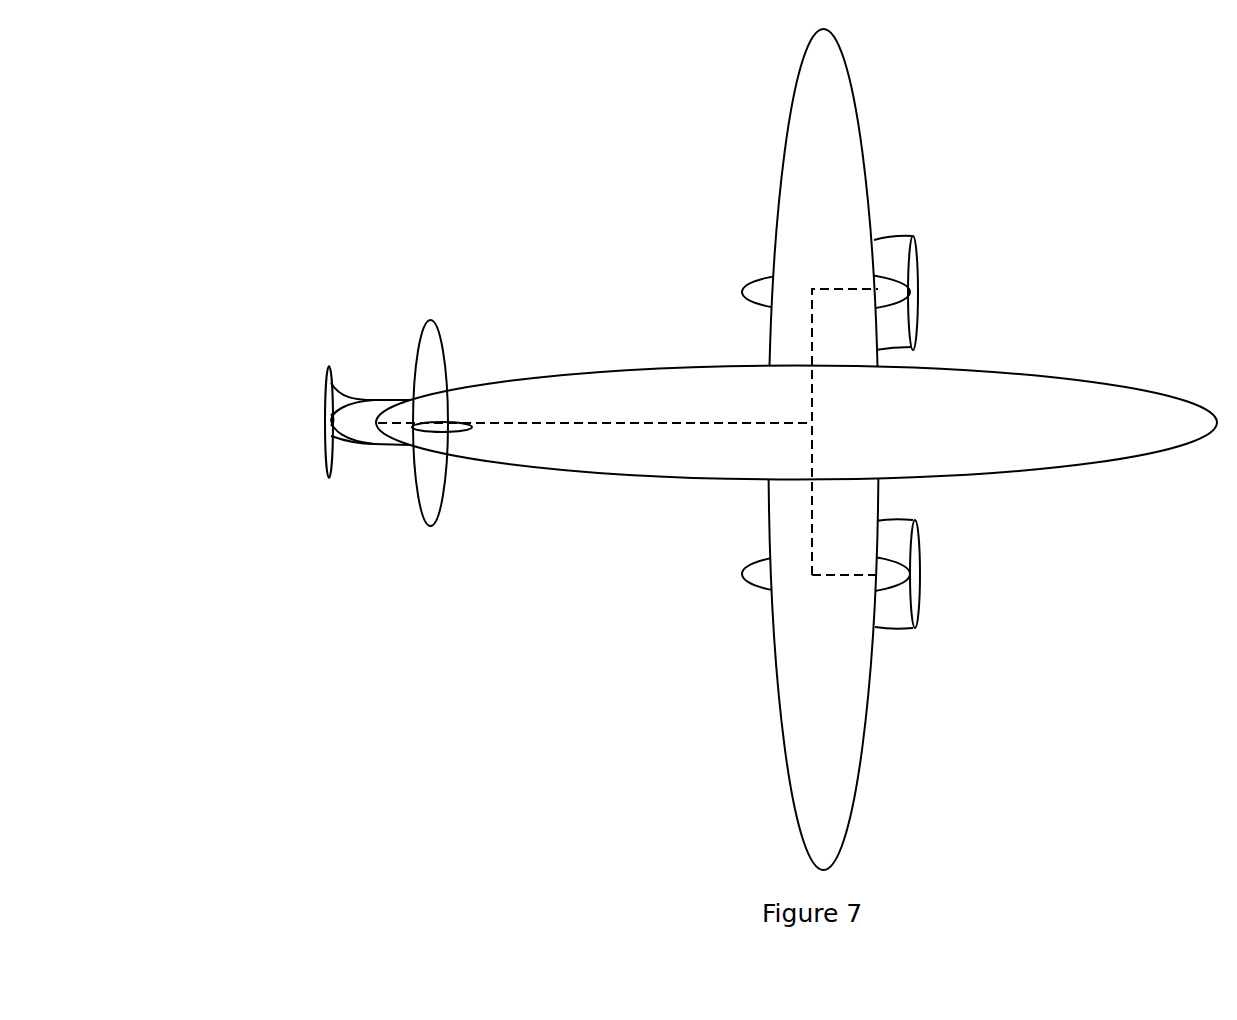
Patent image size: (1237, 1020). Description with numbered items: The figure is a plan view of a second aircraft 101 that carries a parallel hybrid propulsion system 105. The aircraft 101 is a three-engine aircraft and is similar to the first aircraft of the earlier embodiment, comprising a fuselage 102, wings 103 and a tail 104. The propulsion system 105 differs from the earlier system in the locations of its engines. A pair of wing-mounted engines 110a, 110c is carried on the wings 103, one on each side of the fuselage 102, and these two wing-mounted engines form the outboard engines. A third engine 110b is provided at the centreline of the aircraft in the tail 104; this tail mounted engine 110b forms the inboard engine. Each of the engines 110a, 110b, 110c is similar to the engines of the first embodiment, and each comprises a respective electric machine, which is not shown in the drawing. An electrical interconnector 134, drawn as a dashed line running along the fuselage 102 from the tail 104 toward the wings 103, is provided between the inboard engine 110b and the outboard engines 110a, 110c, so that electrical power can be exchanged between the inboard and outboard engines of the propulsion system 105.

The aircraft 101 is at (1092, 206).
The fuselage 102 is at (602, 366).
The wings 103 is at (765, 553).
The tail 104 is at (417, 496).
The propulsion system 105 is at (705, 88).
The wing-mounted engine 110a is at (768, 275).
The tail mounted engine 110b is at (329, 385).
The wing-mounted engine 110c is at (877, 595).
The electrical interconnector 134 is at (663, 423).